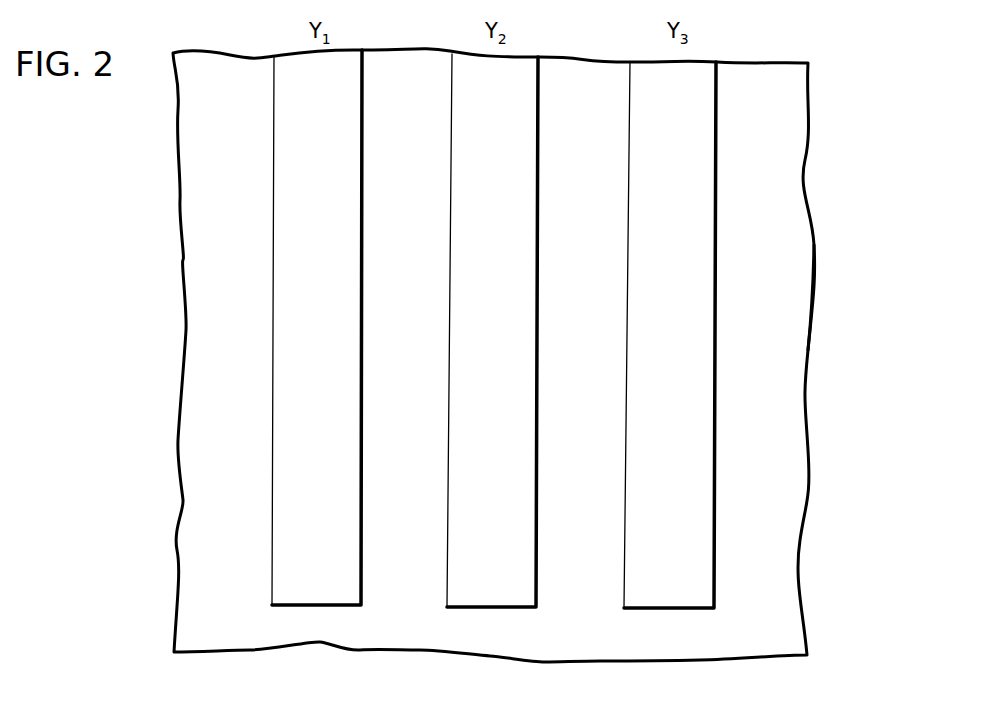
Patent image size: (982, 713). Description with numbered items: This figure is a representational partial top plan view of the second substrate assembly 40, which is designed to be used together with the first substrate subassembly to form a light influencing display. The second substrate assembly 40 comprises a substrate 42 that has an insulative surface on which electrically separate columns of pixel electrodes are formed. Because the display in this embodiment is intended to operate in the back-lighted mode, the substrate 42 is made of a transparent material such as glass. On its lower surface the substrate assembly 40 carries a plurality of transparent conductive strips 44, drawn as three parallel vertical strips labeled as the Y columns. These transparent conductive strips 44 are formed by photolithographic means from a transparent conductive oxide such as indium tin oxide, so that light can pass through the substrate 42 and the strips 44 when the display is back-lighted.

The second substrate assembly 40 is at (818, 153).
The substrate 42 is at (800, 245).
The transparent conductive strips 44 is at (363, 371).